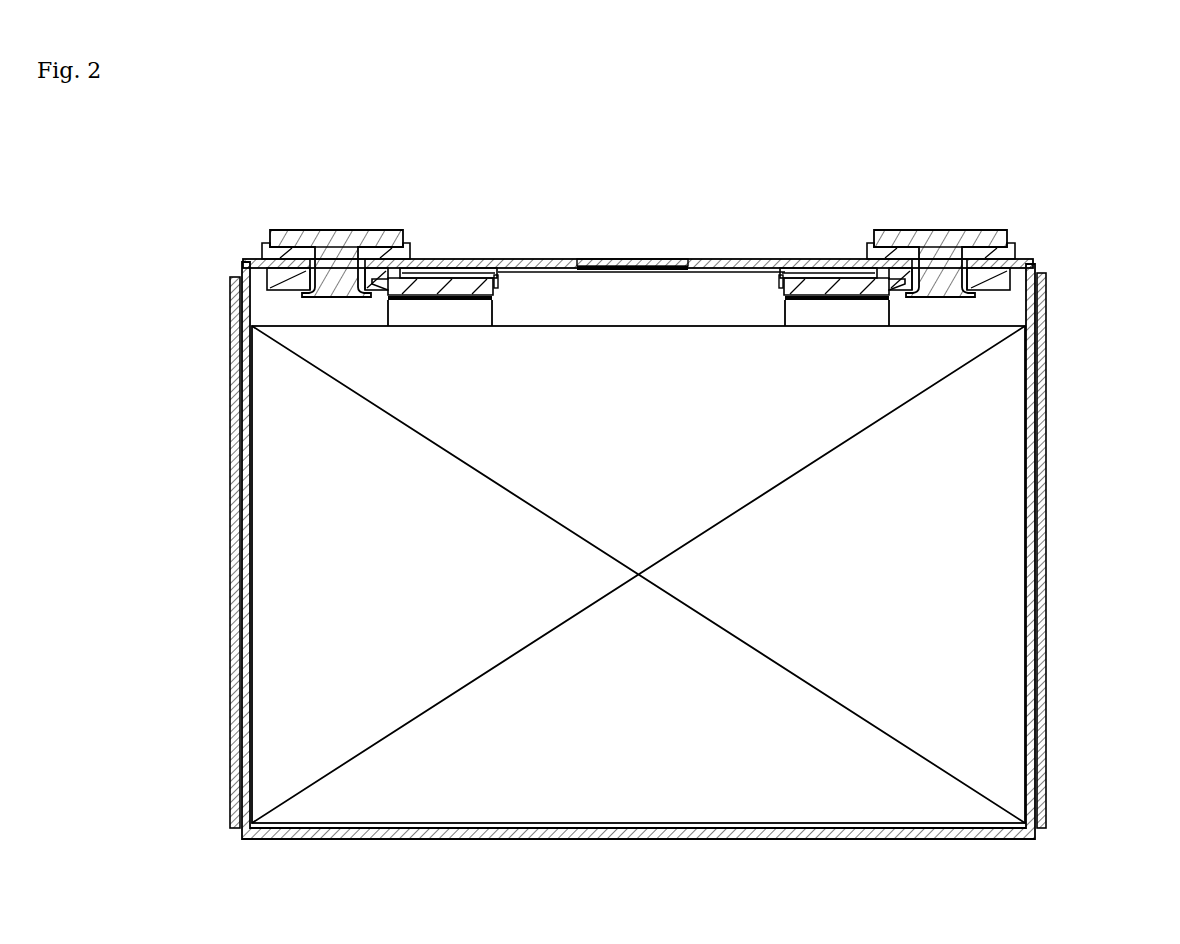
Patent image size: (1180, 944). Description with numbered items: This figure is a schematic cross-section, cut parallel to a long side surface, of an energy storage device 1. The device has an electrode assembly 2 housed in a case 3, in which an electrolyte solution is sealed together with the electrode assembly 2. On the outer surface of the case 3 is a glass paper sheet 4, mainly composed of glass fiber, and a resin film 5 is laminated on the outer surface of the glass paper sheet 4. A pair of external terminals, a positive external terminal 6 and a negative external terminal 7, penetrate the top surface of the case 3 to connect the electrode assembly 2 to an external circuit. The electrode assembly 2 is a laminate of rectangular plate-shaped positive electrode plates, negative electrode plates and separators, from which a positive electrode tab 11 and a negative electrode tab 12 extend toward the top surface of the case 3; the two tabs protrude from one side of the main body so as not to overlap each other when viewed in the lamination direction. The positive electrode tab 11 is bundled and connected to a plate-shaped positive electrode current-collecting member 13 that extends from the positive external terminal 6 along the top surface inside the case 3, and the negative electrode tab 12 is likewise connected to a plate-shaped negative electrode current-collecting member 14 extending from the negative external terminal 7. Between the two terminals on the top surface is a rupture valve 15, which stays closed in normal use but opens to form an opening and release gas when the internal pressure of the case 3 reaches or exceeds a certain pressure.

The energy storage device 1 is at (1111, 184).
The electrode assembly 2 is at (707, 327).
The case 3 is at (557, 258).
The glass paper sheet 4 is at (1030, 261).
The resin film 5 is at (1043, 274).
The positive external terminal 6 is at (941, 230).
The negative external terminal 7 is at (340, 230).
The positive electrode tab 11 is at (787, 313).
The negative electrode tab 12 is at (490, 312).
The positive electrode current-collecting member 13 is at (826, 262).
The negative electrode current-collecting member 14 is at (450, 268).
The rupture valve 15 is at (633, 259).